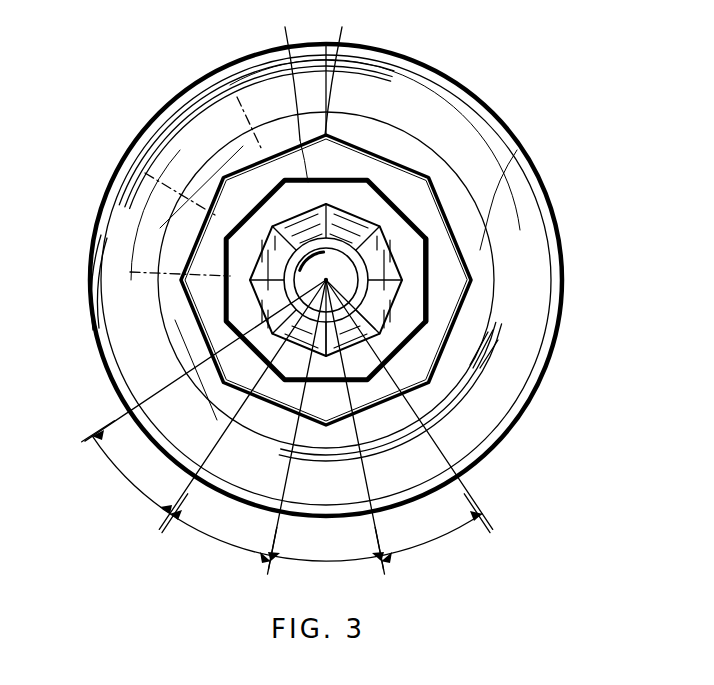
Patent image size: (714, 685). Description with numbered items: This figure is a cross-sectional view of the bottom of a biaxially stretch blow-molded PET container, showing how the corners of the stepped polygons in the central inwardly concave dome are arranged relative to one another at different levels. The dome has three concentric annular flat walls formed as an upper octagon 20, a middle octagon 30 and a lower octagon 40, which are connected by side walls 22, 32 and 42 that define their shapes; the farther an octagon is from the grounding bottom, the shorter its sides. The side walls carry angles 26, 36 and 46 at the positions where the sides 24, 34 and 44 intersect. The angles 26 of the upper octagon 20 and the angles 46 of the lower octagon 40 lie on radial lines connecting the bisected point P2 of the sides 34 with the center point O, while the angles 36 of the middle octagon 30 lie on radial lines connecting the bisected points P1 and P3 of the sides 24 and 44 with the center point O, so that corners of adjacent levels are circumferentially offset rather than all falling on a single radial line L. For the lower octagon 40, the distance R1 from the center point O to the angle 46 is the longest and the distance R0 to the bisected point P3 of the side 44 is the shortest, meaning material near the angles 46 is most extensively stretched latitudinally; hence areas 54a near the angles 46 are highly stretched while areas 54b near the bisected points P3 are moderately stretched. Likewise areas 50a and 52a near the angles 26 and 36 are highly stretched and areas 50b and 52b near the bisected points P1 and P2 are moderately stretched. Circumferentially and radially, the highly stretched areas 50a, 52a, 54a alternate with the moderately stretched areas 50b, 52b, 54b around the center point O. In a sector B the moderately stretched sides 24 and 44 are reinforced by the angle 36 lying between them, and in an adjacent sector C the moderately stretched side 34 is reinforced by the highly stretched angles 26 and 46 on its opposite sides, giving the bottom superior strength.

The upper octagon 20 is at (440, 203).
The side wall 22 is at (358, 140).
The side 24 is at (493, 422).
The angle 26 is at (225, 303).
The middle octagon 30 is at (410, 150).
The side wall 32 is at (342, 68).
The side 34 is at (362, 445).
The angle 36 is at (237, 385).
The lower octagon 40 is at (380, 130).
The side wall 42 is at (287, 71).
The side 44 is at (293, 430).
The angle 46 is at (215, 365).
The highly stretched area 50a is at (500, 355).
The moderately stretched area 50b is at (490, 330).
The highly stretched area 52a is at (428, 241).
The moderately stretched area 52b is at (429, 284).
The highly stretched area 54a is at (190, 160).
The moderately stretched area 54b is at (220, 172).
The center point O is at (400, 272).
The radial line L is at (240, 270).
The bisected point P1 is at (500, 402).
The bisected point P2 is at (225, 365).
The bisected point P3 is at (242, 426).
The shortest distance R0 is at (145, 173).
The longest distance R1 is at (237, 97).
The sector B is at (286, 497).
The sector C is at (226, 538).